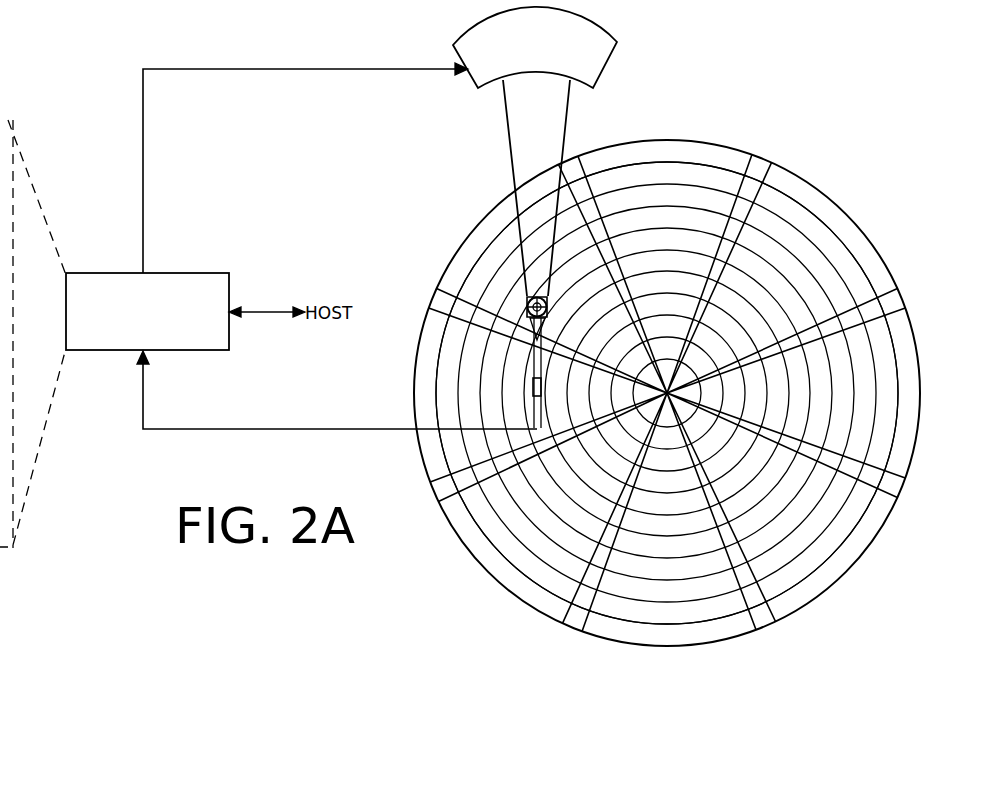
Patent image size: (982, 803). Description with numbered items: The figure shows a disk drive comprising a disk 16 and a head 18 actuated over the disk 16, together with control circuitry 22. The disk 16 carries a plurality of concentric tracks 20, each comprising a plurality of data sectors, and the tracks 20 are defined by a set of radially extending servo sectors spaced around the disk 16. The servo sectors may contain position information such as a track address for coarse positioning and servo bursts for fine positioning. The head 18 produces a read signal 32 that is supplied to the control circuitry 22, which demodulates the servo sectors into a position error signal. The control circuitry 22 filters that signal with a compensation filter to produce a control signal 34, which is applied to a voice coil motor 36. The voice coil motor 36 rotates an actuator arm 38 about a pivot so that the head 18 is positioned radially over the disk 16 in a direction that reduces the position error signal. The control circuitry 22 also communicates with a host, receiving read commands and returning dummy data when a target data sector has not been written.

The disk 16 is at (842, 186).
The head 18 is at (530, 395).
The tracks 20 is at (672, 172).
The control circuitry 22 is at (190, 273).
The read signal 32 is at (297, 431).
The control signal 34 is at (143, 154).
The voice coil motor 36 is at (470, 78).
The actuator arm 38 is at (516, 170).